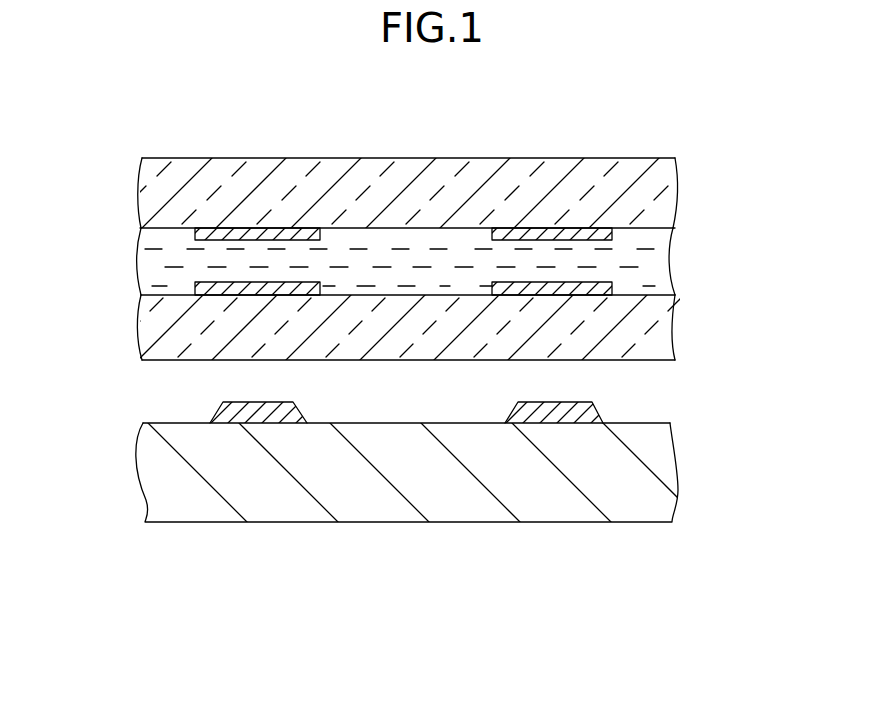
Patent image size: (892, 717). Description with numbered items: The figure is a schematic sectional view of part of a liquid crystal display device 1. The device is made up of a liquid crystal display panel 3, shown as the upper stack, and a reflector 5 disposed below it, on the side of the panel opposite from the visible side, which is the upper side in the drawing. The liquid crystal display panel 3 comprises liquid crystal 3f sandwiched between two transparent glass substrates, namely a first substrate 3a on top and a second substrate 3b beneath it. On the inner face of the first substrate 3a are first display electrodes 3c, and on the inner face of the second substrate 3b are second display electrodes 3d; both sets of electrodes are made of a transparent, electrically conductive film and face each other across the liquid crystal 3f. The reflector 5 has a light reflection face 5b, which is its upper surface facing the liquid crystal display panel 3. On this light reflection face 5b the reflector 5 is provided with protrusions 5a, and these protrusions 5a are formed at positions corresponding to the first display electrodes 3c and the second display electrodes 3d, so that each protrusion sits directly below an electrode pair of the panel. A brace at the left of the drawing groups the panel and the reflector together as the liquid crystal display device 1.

The liquid crystal display device 1 is at (95, 153).
The liquid crystal display panel 3 is at (250, 132).
The first substrate 3a is at (667, 178).
The second substrate 3b is at (667, 330).
The first display electrodes 3c is at (567, 230).
The second display electrodes 3d is at (605, 285).
The liquid crystal 3f is at (658, 263).
The reflector 5 is at (663, 447).
The protrusions 5a is at (267, 420).
The light reflection face 5b is at (363, 423).